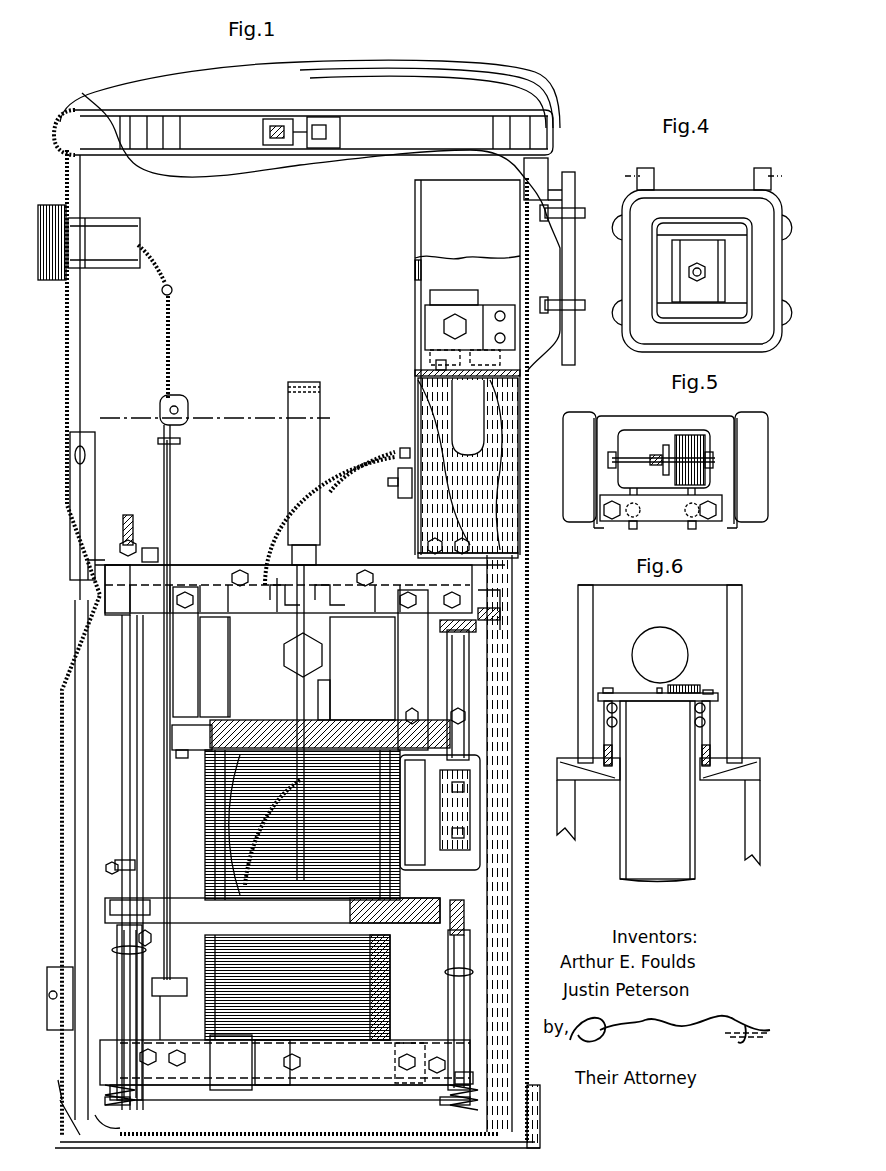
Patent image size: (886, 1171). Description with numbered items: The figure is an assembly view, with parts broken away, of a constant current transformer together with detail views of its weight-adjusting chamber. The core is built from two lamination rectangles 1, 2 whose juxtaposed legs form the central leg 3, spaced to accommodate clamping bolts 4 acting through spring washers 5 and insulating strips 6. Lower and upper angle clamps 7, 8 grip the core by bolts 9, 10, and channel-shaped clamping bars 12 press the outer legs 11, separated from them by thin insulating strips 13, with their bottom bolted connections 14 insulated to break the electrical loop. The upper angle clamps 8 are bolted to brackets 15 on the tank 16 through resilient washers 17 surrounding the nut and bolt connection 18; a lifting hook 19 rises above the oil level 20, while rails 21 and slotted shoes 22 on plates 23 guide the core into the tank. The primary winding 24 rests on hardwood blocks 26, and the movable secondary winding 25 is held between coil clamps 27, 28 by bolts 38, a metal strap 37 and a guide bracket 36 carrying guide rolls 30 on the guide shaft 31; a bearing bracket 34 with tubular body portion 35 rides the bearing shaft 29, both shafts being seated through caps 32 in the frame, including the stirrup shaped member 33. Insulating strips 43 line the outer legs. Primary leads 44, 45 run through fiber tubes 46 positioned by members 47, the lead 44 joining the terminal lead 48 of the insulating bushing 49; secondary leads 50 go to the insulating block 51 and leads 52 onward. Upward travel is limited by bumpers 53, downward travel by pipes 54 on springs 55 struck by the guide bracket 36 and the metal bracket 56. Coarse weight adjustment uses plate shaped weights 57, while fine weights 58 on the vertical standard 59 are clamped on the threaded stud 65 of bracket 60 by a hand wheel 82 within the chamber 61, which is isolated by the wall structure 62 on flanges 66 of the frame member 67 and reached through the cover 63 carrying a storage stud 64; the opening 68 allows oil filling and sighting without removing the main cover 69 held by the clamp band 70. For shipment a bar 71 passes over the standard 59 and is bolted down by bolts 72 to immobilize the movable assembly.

In FIG. 1, the rectangle 1 is at (262, 1090).
In FIG. 1, the rectangle 2 is at (285, 1053).
In FIG. 1, the central leg 3 is at (324, 673).
In FIG. 1, the clamping bolts 4 is at (325, 638).
In FIG. 1, the spring washers 5 is at (320, 655).
In FIG. 1, the strips of insulating material 6 is at (322, 692).
In FIG. 1, the angle clamps 7 is at (462, 1078).
In FIG. 1, the angle clamps 8 is at (250, 600).
In FIG. 1, the bolts 9 is at (150, 1048).
In FIG. 1, the bolts 10 is at (236, 572).
In FIG. 1, the outer legs 11 is at (200, 670).
In FIG. 1, the clamping bars 12 is at (190, 660).
In FIG. 1, the bolt 13 is at (408, 578).
In FIG. 1, the bolted connections 14 is at (178, 1098).
In FIG. 1, the brackets 15 is at (112, 602).
In FIG. 1, the transformer tank 16 is at (72, 380).
In FIG. 1, the resilient washers 17 is at (100, 556).
In FIG. 1, the nut and bolt connection 18 is at (128, 516).
In FIG. 1, the lifting hook 19 is at (290, 395).
In FIG. 1, the oil level 20 is at (266, 418).
In FIG. 1, the rails 21 is at (95, 488).
In FIG. 1, the slotted shoes 22 is at (68, 1124).
In FIG. 1, the plates 23 is at (158, 1100).
In FIG. 1, the primary winding 24 is at (368, 992).
In FIG. 1, the secondary winding 25 is at (372, 726).
In FIG. 1, the hardwood blocks 26 is at (230, 1070).
In FIG. 1, the coil clamps 27 is at (222, 722).
In FIG. 1, the coil clamps 28 is at (272, 922).
In FIG. 1, the bearing shaft 29 is at (454, 696).
In FIG. 1, the guide rolls 30 is at (130, 874).
In FIG. 1, the guide shaft 31 is at (130, 686).
In FIG. 1, the caps 32 is at (440, 660).
In FIG. 1, the stirrup shaped member 33 is at (478, 656).
In FIG. 1, the bearing bracket 34 is at (440, 812).
In FIG. 1, the tubular body portion 35 is at (450, 782).
In FIG. 1, the guide bracket 36 is at (122, 908).
In FIG. 1, the metal strap 37 is at (192, 741).
In FIG. 1, the bolts 38 is at (190, 822).
In FIG. 1, the strips of insulating material 43 is at (194, 636).
In FIG. 1, the lead 44 is at (172, 376).
In FIG. 1, the lead 45 is at (182, 405).
In FIG. 1, the fiber tubes 46 is at (174, 508).
In FIG. 1, the members 47 is at (172, 560).
In FIG. 1, the terminal lead 48 is at (165, 275).
In FIG. 1, the insulating bushing 49 is at (108, 272).
In FIG. 1, the leads 50 is at (344, 492).
In FIG. 1, the insulating block 51 is at (395, 493).
In FIG. 1, the leads 52 is at (380, 455).
In FIG. 1, the bumpers 53 is at (276, 576).
In FIG. 1, the pipes 54 is at (126, 1016).
In FIG. 1, the springs 55 is at (100, 1082).
In FIG. 1, the metal bracket 56 is at (470, 912).
In FIG. 1, the plate shaped weights 57 is at (456, 816).
In FIG. 1, the weights 58 is at (470, 300).
In FIG. 4, the weights 58 is at (699, 266).
In FIG. 5, the weights 58 is at (690, 438).
In FIG. 6, the weights 58 is at (690, 688).
In FIG. 1, the vertical standard 59 is at (512, 672).
In FIG. 5, the vertical standard 59 is at (608, 428).
In FIG. 6, the vertical standard 59 is at (675, 860).
In FIG. 1, the bracket 60 is at (482, 308).
In FIG. 5, the bracket 60 is at (712, 450).
In FIG. 1, the chamber 61 is at (450, 285).
In FIG. 5, the chamber 61 is at (720, 426).
In FIG. 1, the wall structure 62 is at (418, 194).
In FIG. 6, the wall structure 62 is at (710, 615).
In FIG. 1, the cover 63 is at (569, 185).
In FIG. 4, the cover 63 is at (706, 192).
In FIG. 4, the stud 64 is at (700, 284).
In FIG. 5, the threaded stud 65 is at (656, 464).
In FIG. 1, the flanges 66 is at (418, 376).
In FIG. 5, the flanges 66 is at (665, 467).
In FIG. 6, the flanges 66 is at (573, 760).
In FIG. 1, the frame member 67 is at (418, 414).
In FIG. 6, the frame member 67 is at (752, 840).
In FIG. 1, the opening 68 is at (418, 282).
In FIG. 6, the opening 68 is at (670, 665).
In FIG. 1, the main cover 69 is at (480, 92).
In FIG. 1, the clamp band 70 is at (553, 132).
In FIG. 6, the bar 71 is at (634, 693).
In FIG. 6, the bolts 72 is at (608, 718).
In FIG. 5, the hand wheel 82 is at (662, 452).